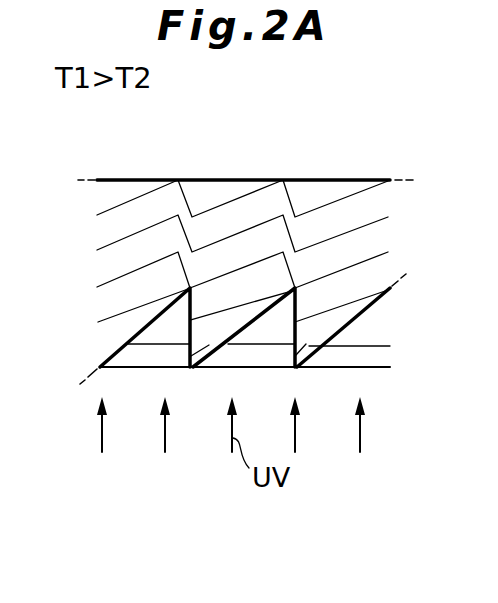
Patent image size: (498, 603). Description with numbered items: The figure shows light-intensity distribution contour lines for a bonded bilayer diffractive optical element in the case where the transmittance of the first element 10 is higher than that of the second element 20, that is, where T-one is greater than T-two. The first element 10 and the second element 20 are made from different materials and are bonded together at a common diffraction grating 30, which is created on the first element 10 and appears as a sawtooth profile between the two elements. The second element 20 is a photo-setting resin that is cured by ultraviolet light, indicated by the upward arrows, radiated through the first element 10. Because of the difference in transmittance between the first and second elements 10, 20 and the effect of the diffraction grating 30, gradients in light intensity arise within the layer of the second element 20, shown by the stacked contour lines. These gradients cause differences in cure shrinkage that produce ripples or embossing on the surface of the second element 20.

The first element 10 is at (120, 361).
The second element 20 is at (88, 257).
The diffraction grating 30 is at (240, 327).